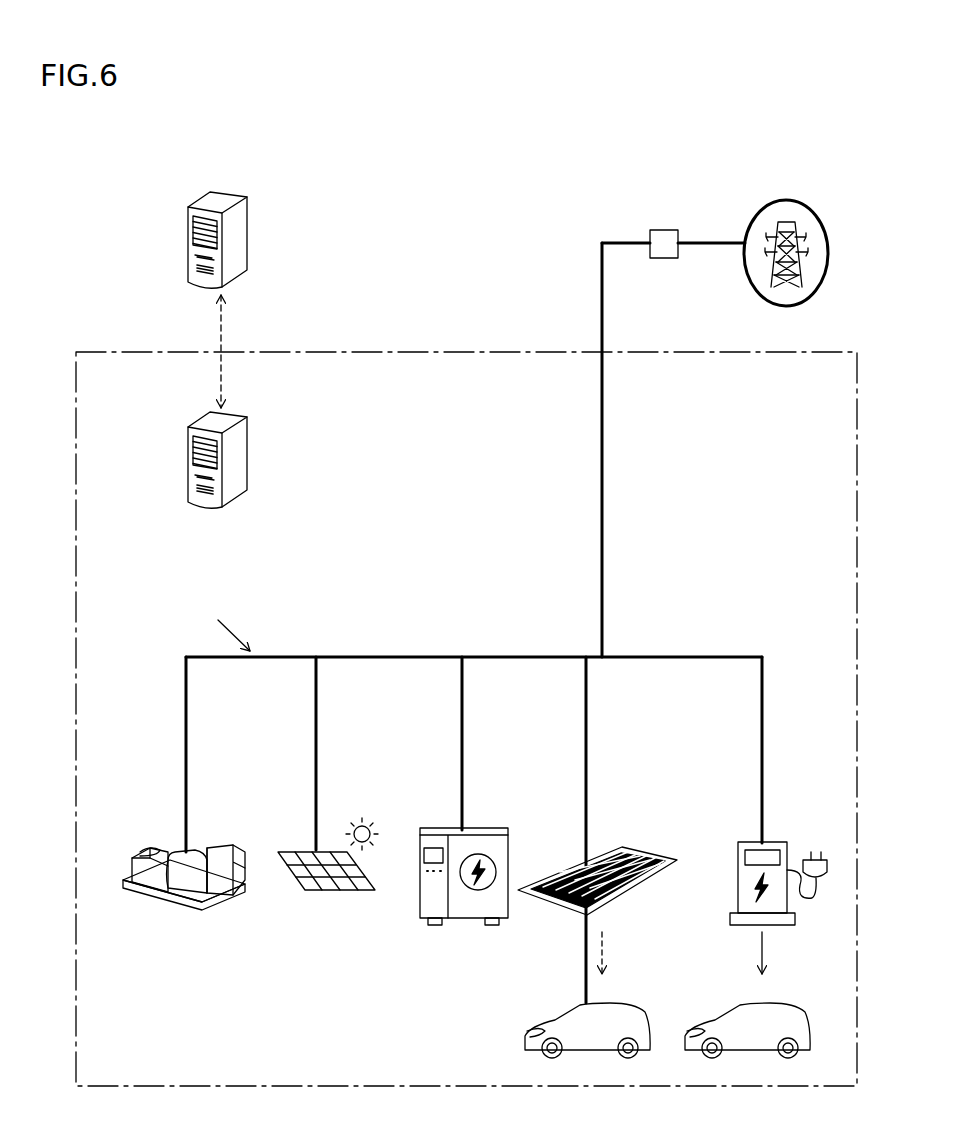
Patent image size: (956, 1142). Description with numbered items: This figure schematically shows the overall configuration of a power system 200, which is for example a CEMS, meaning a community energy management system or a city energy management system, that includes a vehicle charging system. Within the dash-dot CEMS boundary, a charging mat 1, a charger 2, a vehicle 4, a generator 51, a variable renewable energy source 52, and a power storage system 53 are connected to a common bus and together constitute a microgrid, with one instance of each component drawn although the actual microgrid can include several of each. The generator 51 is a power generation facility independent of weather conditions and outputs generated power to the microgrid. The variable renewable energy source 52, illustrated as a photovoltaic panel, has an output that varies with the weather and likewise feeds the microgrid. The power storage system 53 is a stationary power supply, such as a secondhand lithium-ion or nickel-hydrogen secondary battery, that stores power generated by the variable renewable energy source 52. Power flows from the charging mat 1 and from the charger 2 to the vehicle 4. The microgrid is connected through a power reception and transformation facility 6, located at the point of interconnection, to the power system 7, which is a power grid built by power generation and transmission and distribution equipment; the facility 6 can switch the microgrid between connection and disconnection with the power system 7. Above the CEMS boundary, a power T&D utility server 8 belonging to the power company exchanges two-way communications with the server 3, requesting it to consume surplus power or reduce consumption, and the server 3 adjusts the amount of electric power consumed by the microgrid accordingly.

The power system 200 is at (131, 168).
The power T&D utility server 8 is at (234, 196).
The server 3 is at (234, 415).
The power reception and transformation facility 6 is at (668, 232).
The power system 7 is at (807, 207).
The generator 51 is at (220, 846).
The variable renewable energy source 52 is at (292, 851).
The power storage system 53 is at (487, 829).
The charging mat 1 is at (638, 850).
The charger 2 is at (777, 842).
The vehicle 4 is at (603, 1002).